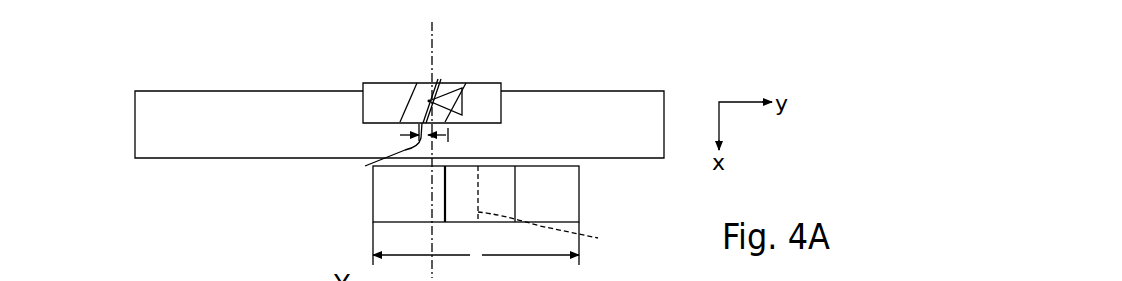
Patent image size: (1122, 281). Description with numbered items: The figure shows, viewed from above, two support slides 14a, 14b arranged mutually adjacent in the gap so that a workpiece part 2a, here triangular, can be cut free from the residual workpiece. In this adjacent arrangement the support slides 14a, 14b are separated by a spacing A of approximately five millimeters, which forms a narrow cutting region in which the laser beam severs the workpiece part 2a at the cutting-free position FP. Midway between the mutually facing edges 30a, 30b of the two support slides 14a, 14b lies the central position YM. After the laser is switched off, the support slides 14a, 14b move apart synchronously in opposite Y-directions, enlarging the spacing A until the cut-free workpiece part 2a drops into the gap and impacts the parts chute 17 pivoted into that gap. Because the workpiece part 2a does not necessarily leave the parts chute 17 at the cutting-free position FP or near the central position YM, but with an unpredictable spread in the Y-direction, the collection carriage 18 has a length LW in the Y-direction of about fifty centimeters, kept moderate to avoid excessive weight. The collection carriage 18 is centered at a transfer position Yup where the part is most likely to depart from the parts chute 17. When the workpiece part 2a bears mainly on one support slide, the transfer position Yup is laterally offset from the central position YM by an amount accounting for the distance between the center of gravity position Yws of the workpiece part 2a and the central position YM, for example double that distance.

The parts chute 17 is at (153, 130).
The first support slide 14a is at (350, 73).
The second support slide 14b is at (512, 73).
The facing edge of first support slide 30a is at (434, 88).
The facing edge of second support slide 30b is at (441, 82).
The workpiece part 2a is at (462, 105).
The cutting-free position FP is at (426, 100).
The spacing between support slides A is at (383, 155).
The collection carriage 18 is at (563, 197).
The central position YM is at (448, 139).
The center of gravity position Yws is at (452, 136).
The length of collection carriage LW is at (476, 243).
The transfer position Yup is at (559, 236).